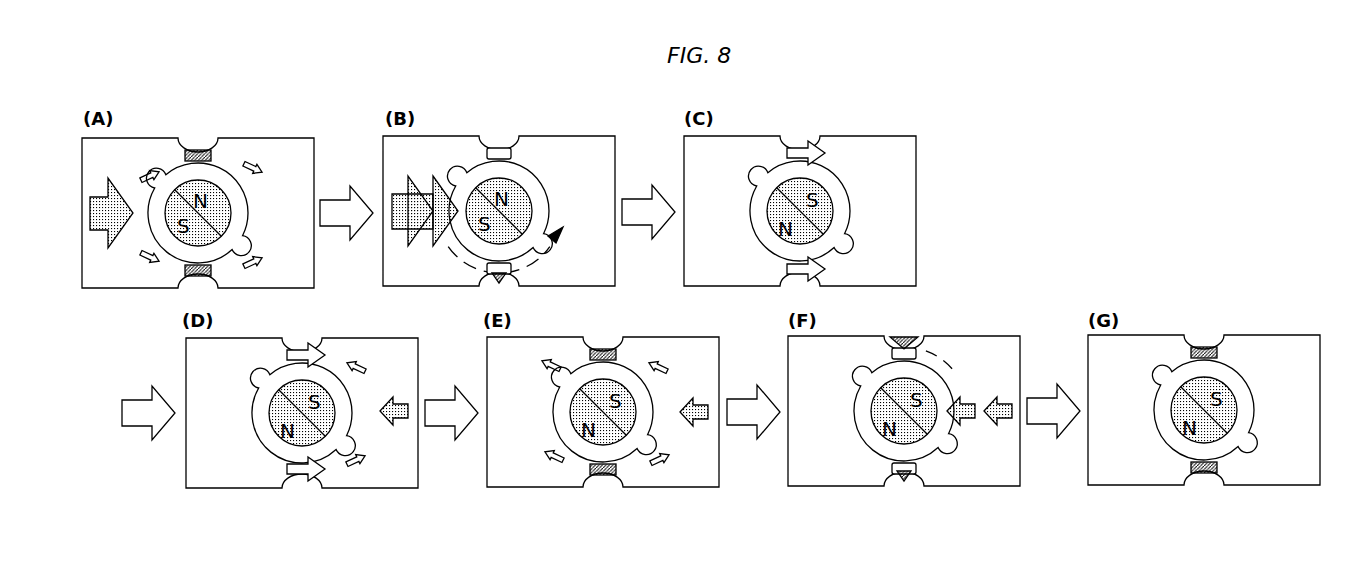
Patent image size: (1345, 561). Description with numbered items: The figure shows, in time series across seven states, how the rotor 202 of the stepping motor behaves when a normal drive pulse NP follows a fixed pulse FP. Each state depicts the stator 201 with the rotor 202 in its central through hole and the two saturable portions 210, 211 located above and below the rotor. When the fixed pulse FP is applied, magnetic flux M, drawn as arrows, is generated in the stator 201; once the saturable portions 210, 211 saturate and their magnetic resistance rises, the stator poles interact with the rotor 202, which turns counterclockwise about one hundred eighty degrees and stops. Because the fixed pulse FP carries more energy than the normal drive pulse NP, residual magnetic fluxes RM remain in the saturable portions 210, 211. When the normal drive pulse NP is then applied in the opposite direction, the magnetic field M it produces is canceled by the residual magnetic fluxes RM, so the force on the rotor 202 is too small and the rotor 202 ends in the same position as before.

The stator 201 is at (289, 150).
The rotor 202 is at (477, 183).
The saturable portion 210 is at (500, 140).
The saturable portion 211 is at (495, 282).
The magnetic flux M is at (141, 170).
The fixed pulse FP is at (103, 224).
The residual magnetic flux RM is at (822, 150).
The normal drive pulse NP is at (398, 425).